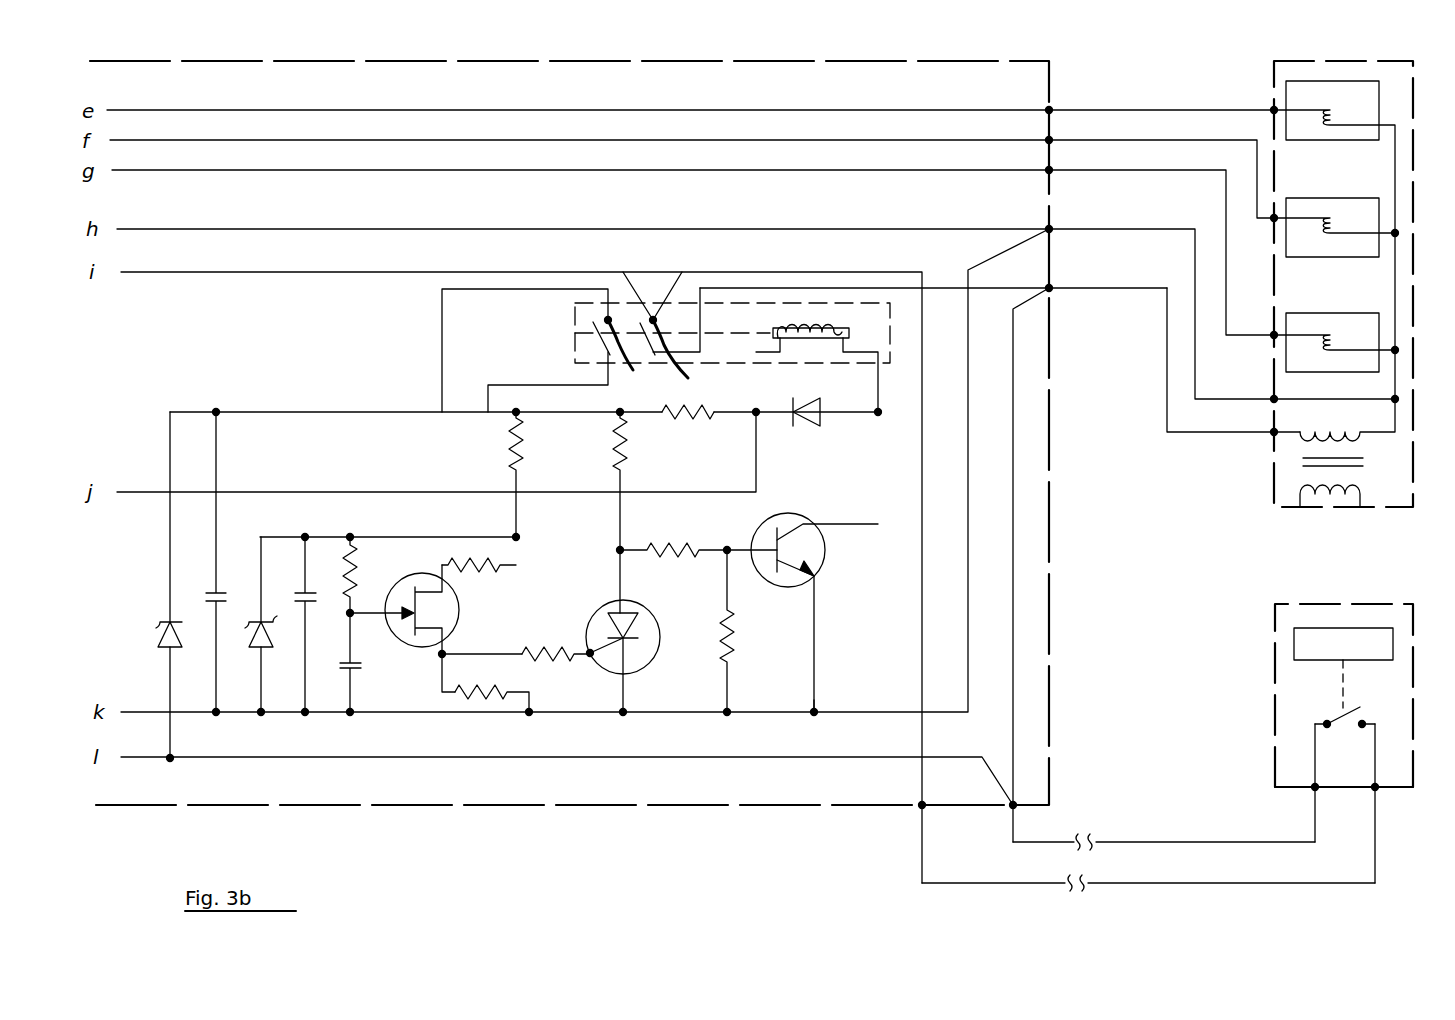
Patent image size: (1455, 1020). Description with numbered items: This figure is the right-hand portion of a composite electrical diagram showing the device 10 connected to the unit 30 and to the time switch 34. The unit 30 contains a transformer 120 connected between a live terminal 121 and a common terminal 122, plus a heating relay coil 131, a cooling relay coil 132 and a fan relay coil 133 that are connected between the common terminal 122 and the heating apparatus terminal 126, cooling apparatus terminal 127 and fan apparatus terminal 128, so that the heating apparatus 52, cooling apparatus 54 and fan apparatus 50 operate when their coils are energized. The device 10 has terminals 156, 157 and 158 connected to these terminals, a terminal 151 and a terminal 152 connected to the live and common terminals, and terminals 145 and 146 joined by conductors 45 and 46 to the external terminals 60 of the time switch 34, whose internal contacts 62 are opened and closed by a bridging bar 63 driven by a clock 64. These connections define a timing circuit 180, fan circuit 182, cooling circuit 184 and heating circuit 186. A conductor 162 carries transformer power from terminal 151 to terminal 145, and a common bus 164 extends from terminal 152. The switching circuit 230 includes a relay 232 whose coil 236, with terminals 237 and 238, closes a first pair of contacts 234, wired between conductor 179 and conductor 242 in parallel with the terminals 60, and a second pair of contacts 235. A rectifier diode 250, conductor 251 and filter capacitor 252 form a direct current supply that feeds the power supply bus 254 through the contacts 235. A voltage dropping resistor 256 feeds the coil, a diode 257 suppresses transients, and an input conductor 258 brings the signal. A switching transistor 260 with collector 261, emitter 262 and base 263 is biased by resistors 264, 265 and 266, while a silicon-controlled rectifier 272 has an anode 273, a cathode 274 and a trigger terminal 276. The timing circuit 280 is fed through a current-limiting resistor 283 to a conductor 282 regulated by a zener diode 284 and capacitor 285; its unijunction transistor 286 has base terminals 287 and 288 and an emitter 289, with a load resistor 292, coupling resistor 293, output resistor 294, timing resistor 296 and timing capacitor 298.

The device 10 is at (678, 812).
The unit 30 is at (1292, 56).
The time switch 34 is at (1270, 713).
The conductor 45 is at (1205, 842).
The conductor 46 is at (1158, 888).
The fan apparatus 50 is at (1380, 336).
The heating apparatus 52 is at (1380, 97).
The cooling apparatus 54 is at (1380, 216).
The external terminals 60 is at (1318, 790).
The internal contacts 62 is at (1330, 728).
The bridging bar 63 is at (1358, 698).
The clock 64 is at (1333, 628).
The transformer 120 is at (1300, 478).
The live terminal 121 is at (1272, 436).
The common terminal 122 is at (1272, 399).
The heating apparatus terminal 126 is at (1270, 110).
The cooling apparatus terminal 127 is at (1270, 220).
The fan apparatus terminal 128 is at (1270, 337).
The heating relay coil 131 is at (1336, 122).
The cooling relay coil 132 is at (1336, 236).
The fan relay coil 133 is at (1340, 340).
The terminal 145 is at (1011, 810).
The terminal 146 is at (920, 810).
The terminal 151 is at (1052, 284).
The terminal 152 is at (1052, 232).
The terminal 156 is at (1050, 110).
The terminal 157 is at (1050, 140).
The terminal 158 is at (1050, 170).
The conductor 162 is at (1018, 384).
The bus 164 is at (1012, 246).
The conductor 179 is at (686, 266).
The timing circuit 180 is at (1318, 888).
The fan circuit 182 is at (1168, 177).
The cooling circuit 184 is at (1166, 122).
The heating circuit 186 is at (1162, 83).
The switching circuit 230 is at (860, 616).
The relay 232 is at (574, 330).
The first pair of contacts 234 is at (685, 356).
The second pair of contacts 235 is at (625, 356).
The coil 236 is at (774, 328).
The terminal 237 is at (782, 392).
The terminal 238 is at (874, 408).
The conductor 242 is at (925, 285).
The rectifier diode 250 is at (158, 622).
The conductor 251 is at (358, 411).
The filter capacitor 252 is at (205, 594).
The power supply bus 254 is at (590, 418).
The voltage dropping resistor 256 is at (688, 420).
The diode 257 is at (812, 422).
The input conductor 258 is at (754, 470).
The switching transistor 260 is at (826, 556).
The collector 261 is at (800, 520).
The emitter 262 is at (800, 580).
The base 263 is at (760, 548).
The resistor 264 is at (628, 448).
The resistor 265 is at (676, 514).
The resistor 266 is at (732, 668).
The silicon-controlled rectifier 272 is at (664, 641).
The anode 273 is at (624, 600).
The cathode 274 is at (626, 662).
The trigger terminal 276 is at (588, 658).
The timing circuit 280 is at (547, 582).
The conductor 282 is at (452, 536).
The current-limiting resistor 283 is at (508, 452).
The zener diode 284 is at (258, 650).
The capacitor 285 is at (301, 590).
The unijunction transistor 286 is at (414, 656).
The base terminal 287 is at (440, 570).
The base terminal 288 is at (447, 650).
The emitter 289 is at (382, 633).
The load resistor 292 is at (476, 578).
The coupling resistor 293 is at (552, 650).
The output resistor 294 is at (465, 700).
The timing resistor 296 is at (336, 548).
The timing capacitor 298 is at (344, 674).